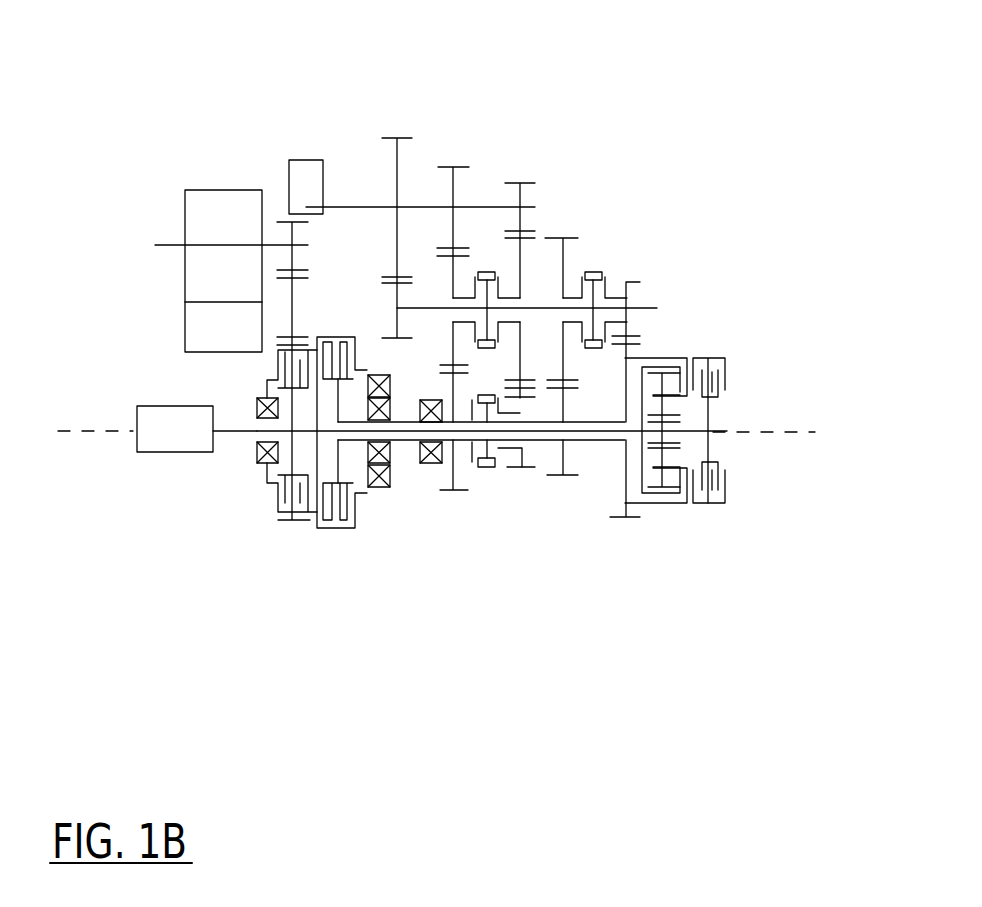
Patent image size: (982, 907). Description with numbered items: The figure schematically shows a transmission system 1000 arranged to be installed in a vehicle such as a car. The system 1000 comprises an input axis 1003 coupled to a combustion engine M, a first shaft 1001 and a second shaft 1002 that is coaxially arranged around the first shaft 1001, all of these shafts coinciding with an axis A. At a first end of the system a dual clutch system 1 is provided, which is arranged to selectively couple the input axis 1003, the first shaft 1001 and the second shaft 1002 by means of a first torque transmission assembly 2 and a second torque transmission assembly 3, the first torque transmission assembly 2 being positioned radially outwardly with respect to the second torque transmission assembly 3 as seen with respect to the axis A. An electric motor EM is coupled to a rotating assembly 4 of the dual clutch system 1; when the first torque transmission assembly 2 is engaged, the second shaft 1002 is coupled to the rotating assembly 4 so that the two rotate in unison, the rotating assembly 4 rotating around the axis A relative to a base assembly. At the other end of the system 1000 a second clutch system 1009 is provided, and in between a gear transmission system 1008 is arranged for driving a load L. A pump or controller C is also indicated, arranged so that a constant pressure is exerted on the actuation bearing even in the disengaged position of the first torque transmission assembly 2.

The dual clutch system 1 is at (289, 447).
The first torque transmission assembly 2 is at (353, 451).
The second torque transmission assembly 3 is at (263, 550).
The rotating assembly 4 is at (317, 338).
The transmission system 1000 is at (537, 358).
The first shaft 1001 is at (395, 435).
The second shaft 1002 is at (408, 445).
The input axis 1003 is at (237, 431).
The gear transmission system 1008 is at (677, 83).
The second clutch system 1009 is at (733, 546).
The load L is at (302, 178).
The electric motor EM is at (218, 218).
The controller C is at (215, 318).
The combustion engine M is at (175, 429).
The axis A is at (777, 432).